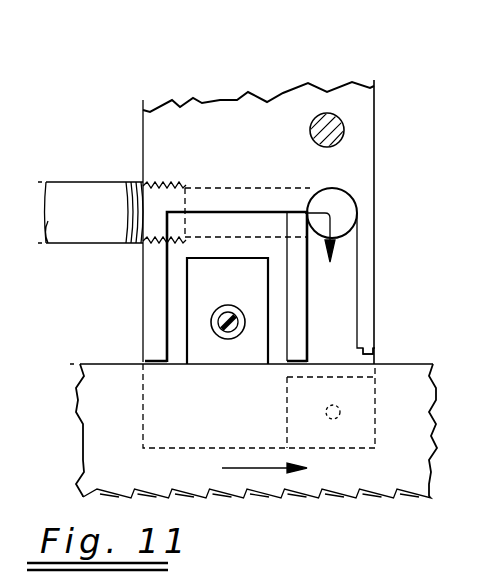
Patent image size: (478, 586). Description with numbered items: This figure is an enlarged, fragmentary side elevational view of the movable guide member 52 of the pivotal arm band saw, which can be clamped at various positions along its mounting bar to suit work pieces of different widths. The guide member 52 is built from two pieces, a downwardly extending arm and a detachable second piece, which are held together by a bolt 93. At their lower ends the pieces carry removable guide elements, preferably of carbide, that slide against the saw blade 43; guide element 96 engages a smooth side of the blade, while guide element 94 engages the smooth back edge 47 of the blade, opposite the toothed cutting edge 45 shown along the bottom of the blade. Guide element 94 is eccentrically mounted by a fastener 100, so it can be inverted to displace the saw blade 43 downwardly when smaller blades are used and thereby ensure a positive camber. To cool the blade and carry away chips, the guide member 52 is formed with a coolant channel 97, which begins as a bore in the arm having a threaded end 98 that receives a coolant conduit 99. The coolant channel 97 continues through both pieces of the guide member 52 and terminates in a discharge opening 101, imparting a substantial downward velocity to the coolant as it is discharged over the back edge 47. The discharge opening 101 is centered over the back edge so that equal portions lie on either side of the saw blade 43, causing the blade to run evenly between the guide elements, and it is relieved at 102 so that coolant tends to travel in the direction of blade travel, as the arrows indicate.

The saw blade 43 is at (413, 380).
The saw teeth 45 is at (353, 497).
The back smooth edge 47 is at (117, 364).
The movable guide member 52 is at (236, 76).
The bolt 93 is at (340, 142).
The guide element 94 is at (206, 347).
The guide element 96 is at (287, 417).
The coolant channel 97 is at (245, 188).
The threaded end 98 is at (160, 182).
The coolant conduit 99 is at (76, 182).
The fastener 100 is at (229, 335).
The discharge opening 101 is at (330, 350).
The relief 102 is at (377, 353).